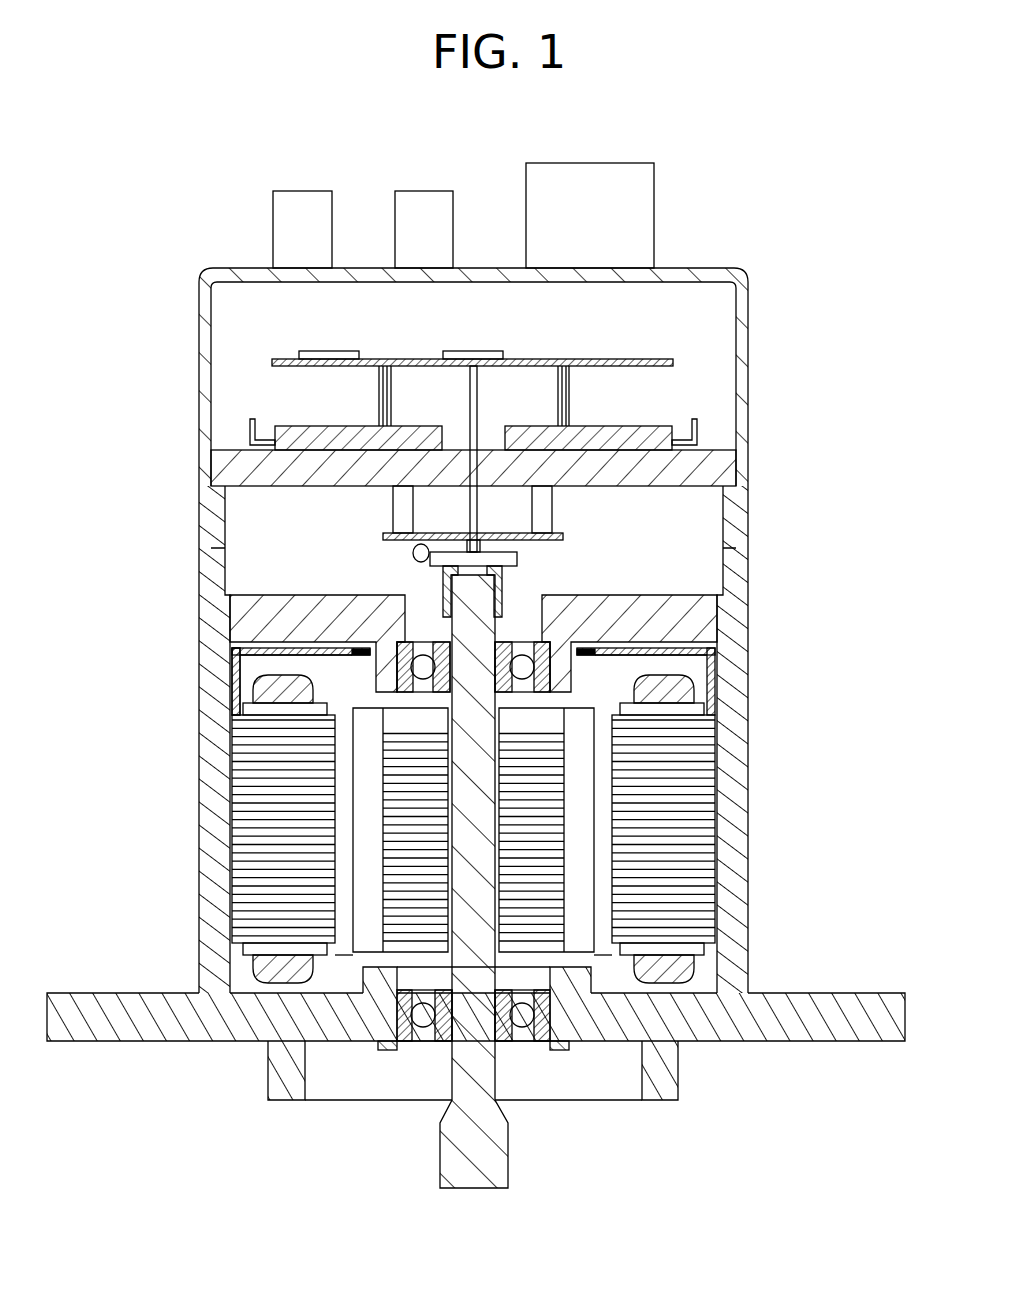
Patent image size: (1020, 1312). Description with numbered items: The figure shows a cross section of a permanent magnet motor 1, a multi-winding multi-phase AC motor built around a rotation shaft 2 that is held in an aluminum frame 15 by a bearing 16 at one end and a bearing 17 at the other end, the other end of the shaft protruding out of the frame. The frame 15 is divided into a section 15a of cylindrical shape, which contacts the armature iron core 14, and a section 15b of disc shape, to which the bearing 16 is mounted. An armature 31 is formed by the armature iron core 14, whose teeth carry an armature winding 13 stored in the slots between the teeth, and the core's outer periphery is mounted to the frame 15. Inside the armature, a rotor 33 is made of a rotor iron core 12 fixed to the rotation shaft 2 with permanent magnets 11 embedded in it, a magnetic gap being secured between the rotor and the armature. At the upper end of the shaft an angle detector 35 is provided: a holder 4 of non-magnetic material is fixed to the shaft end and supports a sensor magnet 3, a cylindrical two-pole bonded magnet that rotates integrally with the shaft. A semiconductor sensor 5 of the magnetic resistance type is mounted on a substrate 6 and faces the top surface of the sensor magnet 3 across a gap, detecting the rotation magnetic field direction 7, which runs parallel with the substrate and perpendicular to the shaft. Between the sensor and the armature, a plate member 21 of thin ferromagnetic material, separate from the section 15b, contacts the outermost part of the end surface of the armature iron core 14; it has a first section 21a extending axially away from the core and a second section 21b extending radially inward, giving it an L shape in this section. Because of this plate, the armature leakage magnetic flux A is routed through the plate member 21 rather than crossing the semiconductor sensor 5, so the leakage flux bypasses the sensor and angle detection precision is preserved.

The permanent magnet motor 1 is at (97, 175).
The rotation shaft 2 is at (482, 805).
The sensor magnet 3 is at (565, 537).
The holder 4 is at (520, 556).
The semiconductor sensor 5 is at (660, 428).
The substrate 6 is at (383, 537).
The rotation magnetic field direction 7 is at (305, 596).
The permanent magnets 11 is at (355, 750).
The rotor iron core 12 is at (395, 843).
The armature winding 13 is at (265, 970).
The armature iron core 14 is at (270, 885).
The frame 15 is at (732, 850).
The section in a cylindrical shape 15a is at (737, 1036).
The section in a disc shape 15b is at (710, 612).
The bearing 16 is at (507, 640).
The bearing 17 is at (542, 1042).
The plate member 21 is at (236, 668).
The first section 21a is at (240, 705).
The second section 21b is at (318, 660).
The armature 31 is at (325, 960).
The rotor 33 is at (600, 960).
The angle detector 35 is at (386, 558).
The armature leakage magnetic flux A is at (268, 658).